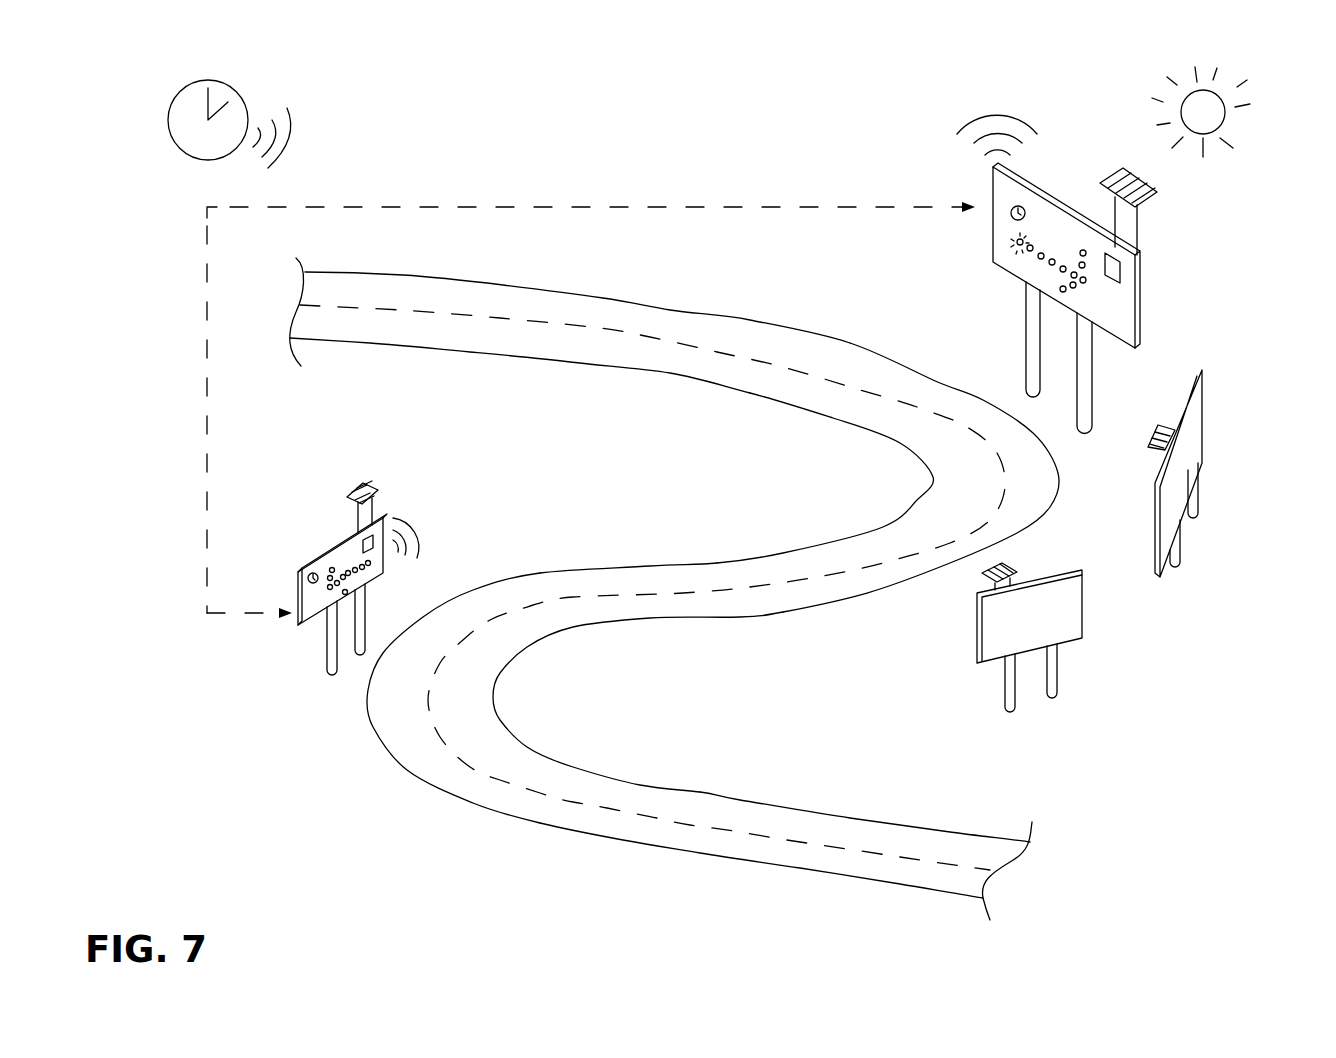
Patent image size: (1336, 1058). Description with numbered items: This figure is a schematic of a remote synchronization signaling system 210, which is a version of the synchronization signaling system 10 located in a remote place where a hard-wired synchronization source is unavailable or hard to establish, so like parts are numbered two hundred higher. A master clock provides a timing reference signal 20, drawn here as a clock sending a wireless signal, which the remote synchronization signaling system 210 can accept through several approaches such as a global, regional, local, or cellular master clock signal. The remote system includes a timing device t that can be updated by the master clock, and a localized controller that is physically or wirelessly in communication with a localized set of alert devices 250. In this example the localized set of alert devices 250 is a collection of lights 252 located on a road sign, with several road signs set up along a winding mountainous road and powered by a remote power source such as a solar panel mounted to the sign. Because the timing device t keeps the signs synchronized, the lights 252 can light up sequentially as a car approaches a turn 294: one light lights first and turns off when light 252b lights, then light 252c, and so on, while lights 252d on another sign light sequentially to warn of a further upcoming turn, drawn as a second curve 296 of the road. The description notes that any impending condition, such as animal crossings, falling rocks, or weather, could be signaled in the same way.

The synchronization signaling system 10 is at (172, 103).
The timing reference signal 20 is at (297, 132).
The remote synchronization signaling system 210 is at (1175, 193).
The localized set of alert devices 250 is at (1049, 232).
The lights 252 is at (1075, 288).
The light 252b is at (1233, 462).
The light 252c is at (1022, 637).
The lights 252d is at (383, 558).
The turn 294 is at (958, 472).
The second road curve 296 is at (462, 703).
The timing device t is at (1013, 206).